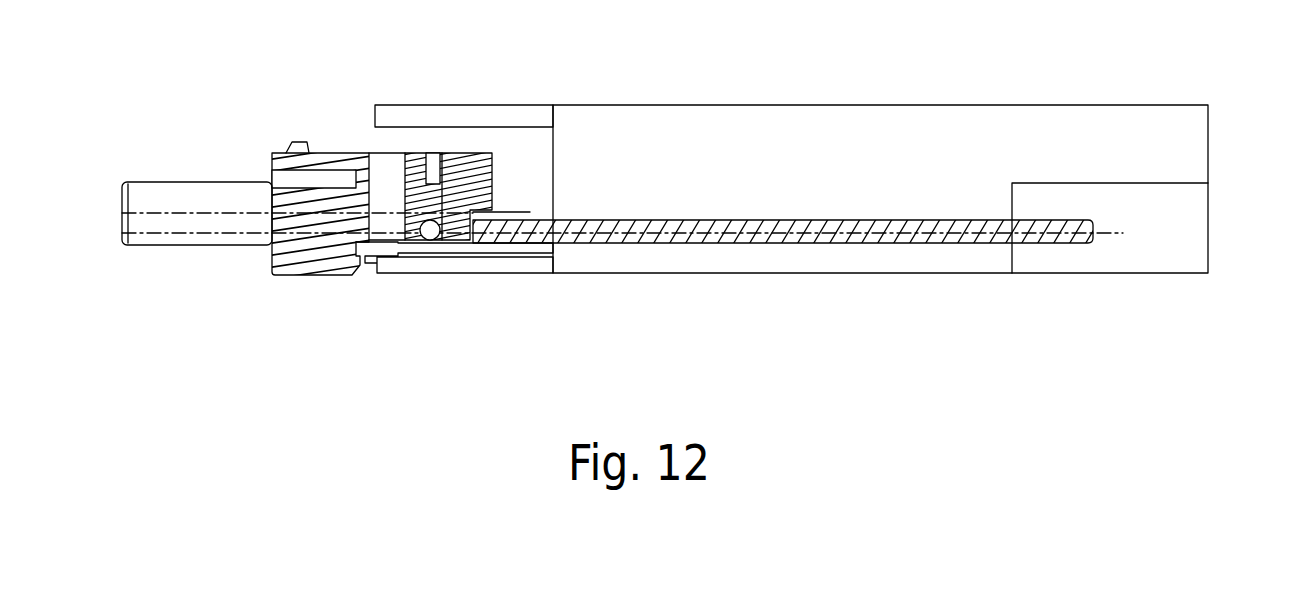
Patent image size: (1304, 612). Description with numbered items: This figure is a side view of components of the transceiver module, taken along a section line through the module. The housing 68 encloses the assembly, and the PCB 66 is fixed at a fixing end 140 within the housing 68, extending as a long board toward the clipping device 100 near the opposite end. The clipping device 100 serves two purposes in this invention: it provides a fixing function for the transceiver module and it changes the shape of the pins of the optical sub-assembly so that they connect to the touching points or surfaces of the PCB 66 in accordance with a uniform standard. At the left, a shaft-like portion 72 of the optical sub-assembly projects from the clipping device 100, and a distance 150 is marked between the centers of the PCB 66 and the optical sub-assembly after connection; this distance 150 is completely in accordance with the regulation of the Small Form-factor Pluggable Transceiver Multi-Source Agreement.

The PCB 66 is at (733, 243).
The housing 68 is at (1018, 104).
The shaft 72 is at (195, 247).
The clipping device 100 is at (470, 153).
The fixing end 140 is at (1195, 223).
The distance 150 is at (104, 173).